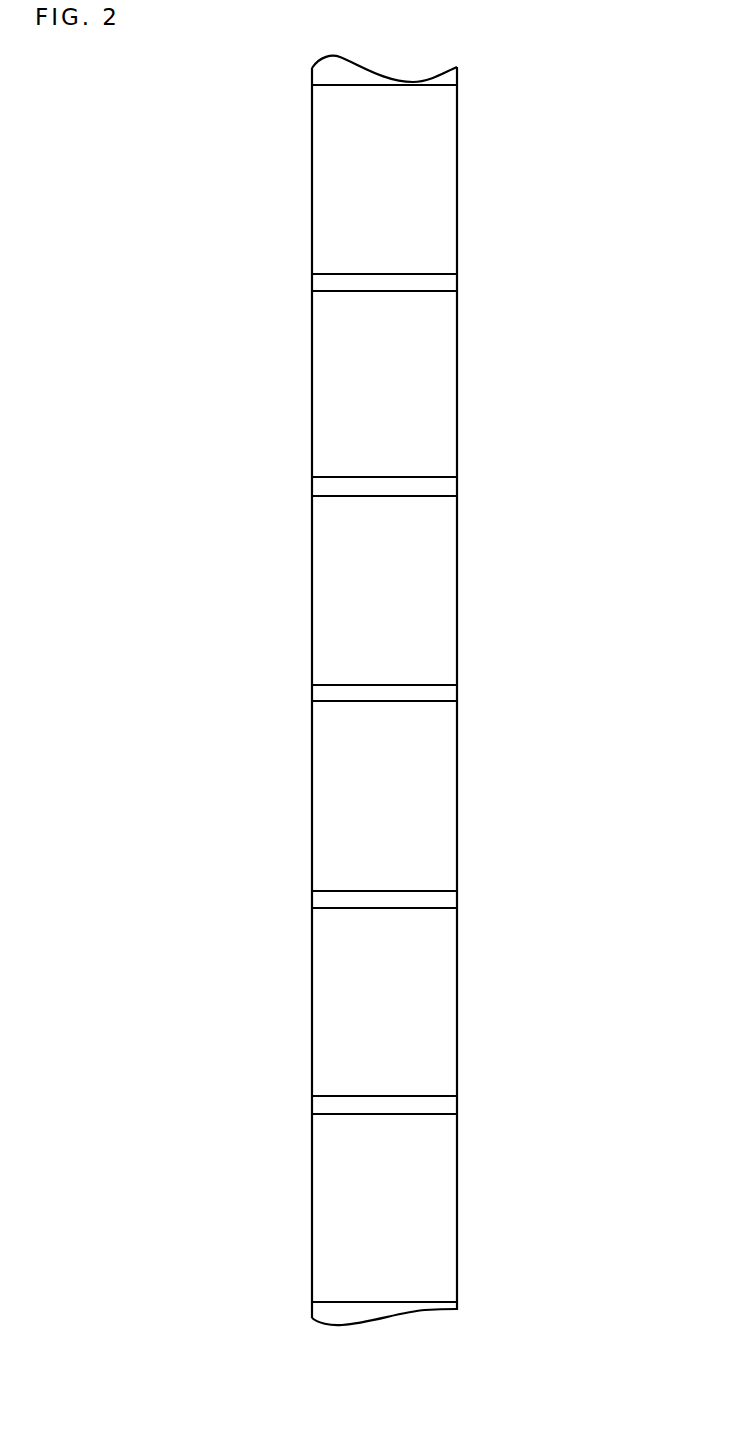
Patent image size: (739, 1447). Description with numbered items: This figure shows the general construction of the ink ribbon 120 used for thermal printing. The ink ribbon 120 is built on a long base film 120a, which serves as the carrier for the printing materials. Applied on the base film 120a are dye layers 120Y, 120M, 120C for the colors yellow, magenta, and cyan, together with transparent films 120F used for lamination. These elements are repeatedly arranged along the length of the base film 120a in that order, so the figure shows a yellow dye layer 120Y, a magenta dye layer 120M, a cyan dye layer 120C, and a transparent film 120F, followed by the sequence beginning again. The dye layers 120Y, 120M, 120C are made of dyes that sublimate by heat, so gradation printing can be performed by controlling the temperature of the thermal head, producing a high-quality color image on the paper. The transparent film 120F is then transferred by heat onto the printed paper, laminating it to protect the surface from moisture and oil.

The ink ribbon 120 is at (533, 111).
The base film 120a is at (443, 697).
The dye layer for yellow 120Y is at (412, 192).
The dye layer for magenta 120M is at (412, 397).
The dye layer for cyan 120C is at (412, 602).
The transparent film for lamination 120F is at (412, 809).